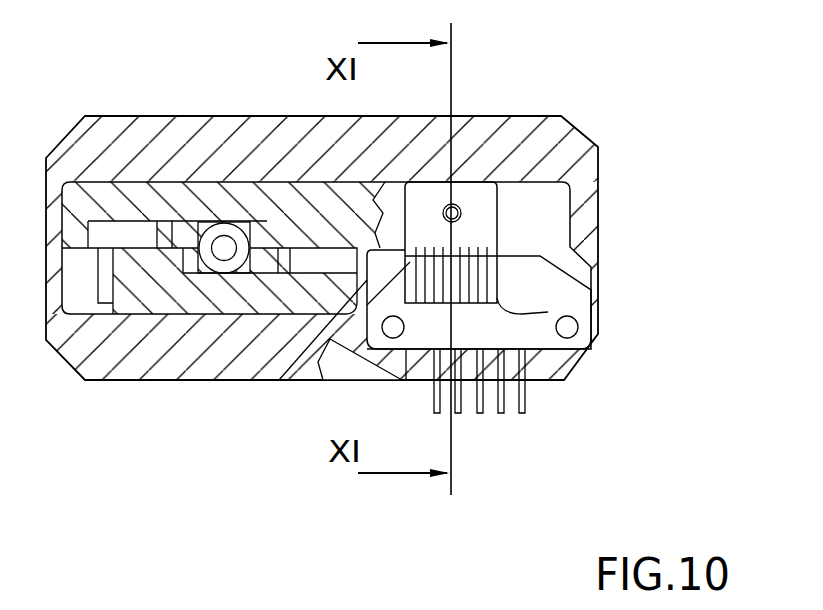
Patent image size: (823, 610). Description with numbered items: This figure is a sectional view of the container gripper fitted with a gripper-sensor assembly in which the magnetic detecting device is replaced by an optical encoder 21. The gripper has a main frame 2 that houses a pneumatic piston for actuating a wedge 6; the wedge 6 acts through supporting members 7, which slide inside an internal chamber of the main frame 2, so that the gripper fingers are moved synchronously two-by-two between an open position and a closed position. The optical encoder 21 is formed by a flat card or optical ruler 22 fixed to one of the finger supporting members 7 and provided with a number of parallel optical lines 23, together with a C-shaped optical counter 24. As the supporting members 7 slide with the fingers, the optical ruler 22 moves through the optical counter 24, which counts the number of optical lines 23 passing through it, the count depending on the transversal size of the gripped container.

The main frame 2 is at (225, 358).
The wedge 6 is at (185, 230).
The supporting members 7 is at (152, 197).
The optical encoder 21 is at (524, 267).
The optical ruler 22 is at (497, 280).
The optical lines 23 is at (527, 312).
The optical counter 24 is at (533, 335).